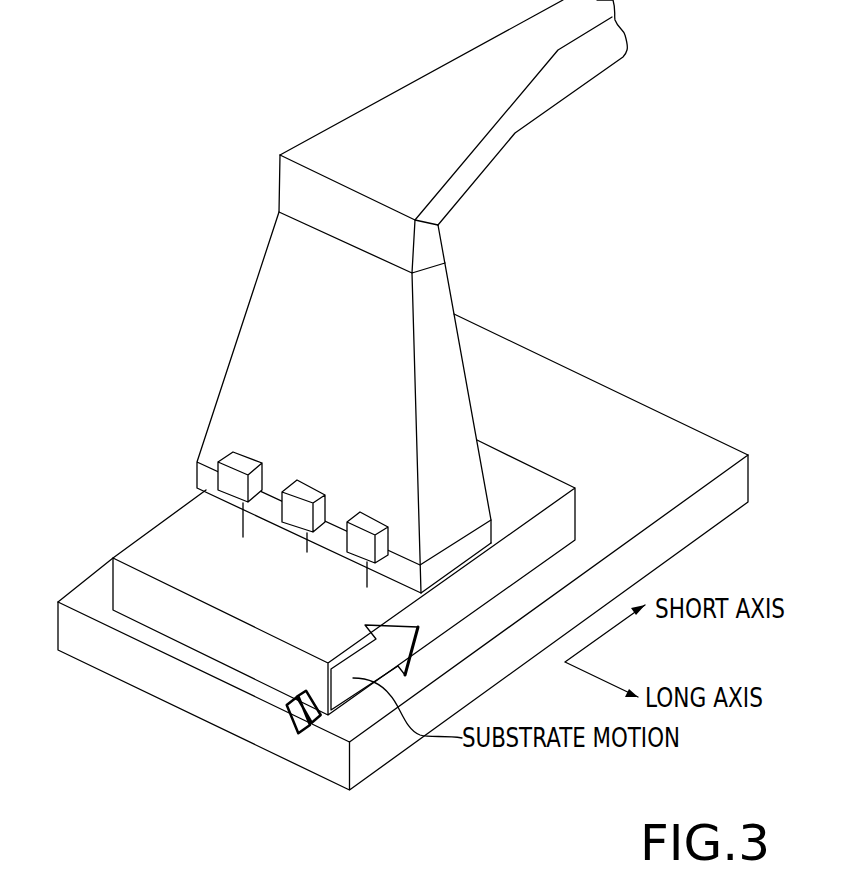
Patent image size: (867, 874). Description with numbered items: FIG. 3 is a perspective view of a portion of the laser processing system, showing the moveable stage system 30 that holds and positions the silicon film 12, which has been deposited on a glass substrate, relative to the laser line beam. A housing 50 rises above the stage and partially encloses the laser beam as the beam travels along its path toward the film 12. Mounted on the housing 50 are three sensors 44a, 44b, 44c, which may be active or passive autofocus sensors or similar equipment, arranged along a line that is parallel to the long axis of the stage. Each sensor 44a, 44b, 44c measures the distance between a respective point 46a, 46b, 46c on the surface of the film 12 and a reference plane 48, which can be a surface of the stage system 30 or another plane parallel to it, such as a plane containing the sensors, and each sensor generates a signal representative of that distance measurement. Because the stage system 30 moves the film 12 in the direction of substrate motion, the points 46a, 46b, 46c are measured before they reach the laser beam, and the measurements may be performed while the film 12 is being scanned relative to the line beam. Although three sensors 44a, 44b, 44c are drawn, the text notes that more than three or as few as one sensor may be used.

The silicon film 12 is at (146, 541).
The moveable stage system 30 is at (707, 520).
The reference plane 48 is at (642, 415).
The housing 50 is at (290, 238).
The sensor 44a is at (240, 456).
The sensor 44b is at (312, 492).
The sensor 44c is at (375, 517).
The point 46a is at (243, 537).
The point 46b is at (307, 552).
The point 46c is at (367, 587).